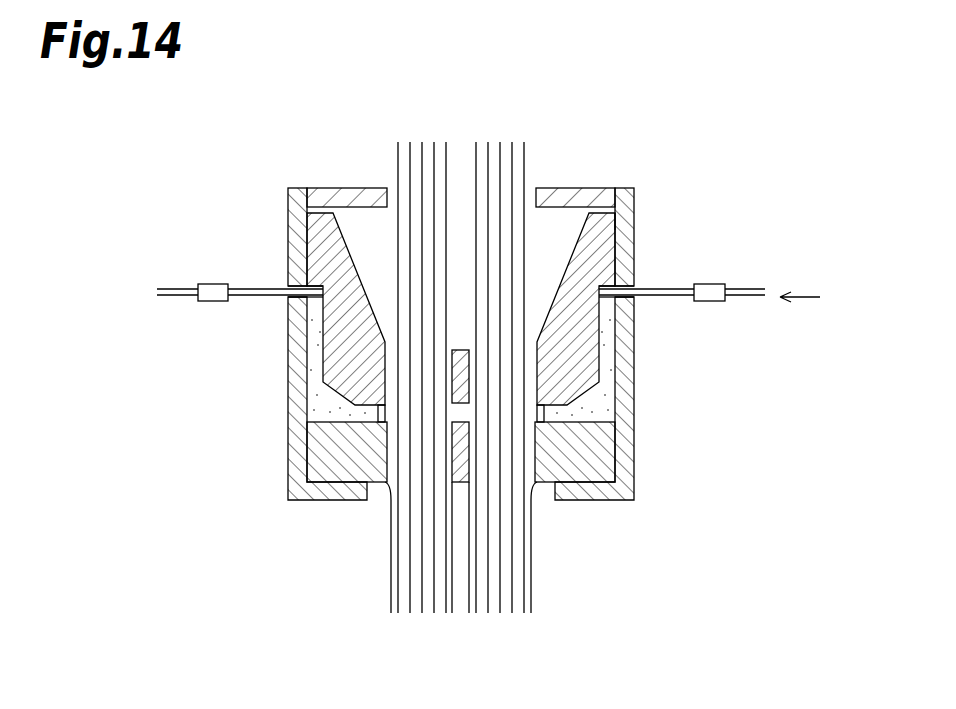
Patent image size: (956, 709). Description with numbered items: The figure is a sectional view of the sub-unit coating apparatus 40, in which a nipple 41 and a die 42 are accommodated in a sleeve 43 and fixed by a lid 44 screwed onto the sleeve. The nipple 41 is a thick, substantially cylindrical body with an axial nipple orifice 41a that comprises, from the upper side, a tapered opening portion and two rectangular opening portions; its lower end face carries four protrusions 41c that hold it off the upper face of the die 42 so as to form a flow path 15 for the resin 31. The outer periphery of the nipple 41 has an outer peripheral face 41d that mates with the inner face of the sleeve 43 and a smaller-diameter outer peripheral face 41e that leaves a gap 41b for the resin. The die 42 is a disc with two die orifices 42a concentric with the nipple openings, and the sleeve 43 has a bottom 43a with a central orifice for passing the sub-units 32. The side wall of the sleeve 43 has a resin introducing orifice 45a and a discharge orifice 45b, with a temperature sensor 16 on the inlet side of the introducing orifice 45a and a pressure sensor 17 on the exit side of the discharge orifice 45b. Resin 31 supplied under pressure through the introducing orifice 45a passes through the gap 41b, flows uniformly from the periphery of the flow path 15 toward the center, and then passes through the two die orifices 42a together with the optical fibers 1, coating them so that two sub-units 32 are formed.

The optical fibers 1 is at (452, 136).
The flow path 15 is at (593, 437).
The temperature sensor 16 is at (718, 286).
The pressure sensor 17 is at (205, 283).
The resin 31 is at (819, 299).
The sub-units 32 is at (474, 575).
The sub-unit coating apparatus 40 is at (697, 154).
The nipple 41 is at (460, 344).
The nipple orifice 41a is at (565, 212).
The gap 41b is at (612, 352).
The protrusions 41c is at (360, 410).
The outer peripheral face 41d is at (617, 223).
The outer peripheral face 41e is at (587, 390).
The die 42 is at (320, 484).
The die orifices 42a is at (393, 508).
The sleeve 43 is at (632, 480).
The bottom 43a is at (595, 500).
The lid 44 is at (343, 193).
The resin introducing orifice 45a is at (634, 287).
The discharge orifice 45b is at (290, 288).